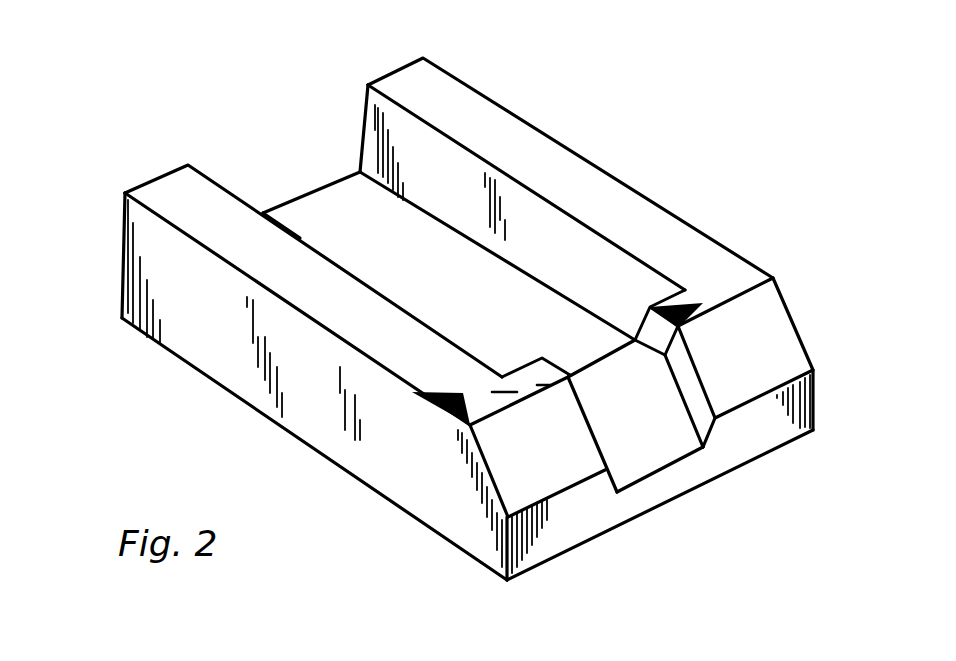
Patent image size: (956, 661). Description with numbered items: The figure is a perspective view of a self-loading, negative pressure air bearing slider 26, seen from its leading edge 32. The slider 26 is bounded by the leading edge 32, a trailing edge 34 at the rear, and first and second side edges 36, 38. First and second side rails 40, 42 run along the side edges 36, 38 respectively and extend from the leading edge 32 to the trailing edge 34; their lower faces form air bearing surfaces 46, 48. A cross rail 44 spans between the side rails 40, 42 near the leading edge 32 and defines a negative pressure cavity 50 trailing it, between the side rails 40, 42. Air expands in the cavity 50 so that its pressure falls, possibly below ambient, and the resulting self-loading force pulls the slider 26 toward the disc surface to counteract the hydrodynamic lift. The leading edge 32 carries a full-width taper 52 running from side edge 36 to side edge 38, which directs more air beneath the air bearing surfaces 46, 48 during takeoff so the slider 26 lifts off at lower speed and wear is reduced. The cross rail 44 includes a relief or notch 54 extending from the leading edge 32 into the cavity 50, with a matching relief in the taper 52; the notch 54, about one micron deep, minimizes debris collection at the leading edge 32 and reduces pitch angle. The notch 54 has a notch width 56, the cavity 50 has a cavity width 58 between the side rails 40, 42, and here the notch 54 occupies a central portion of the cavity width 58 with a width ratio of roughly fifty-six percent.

The slider 26 is at (449, 241).
The leading edge 32 is at (550, 500).
The trailing edge 34 is at (333, 187).
The first side edge 36 is at (343, 343).
The second side edge 38 is at (657, 208).
The first side rail 40 is at (144, 184).
The second side rail 42 is at (407, 62).
The cross rail 44 is at (607, 370).
The air bearing surface 46 is at (237, 236).
The air bearing surface 48 is at (473, 127).
The negative pressure cavity 50 is at (340, 200).
The full-width taper 52 is at (773, 333).
The notch 54 is at (650, 423).
The notch width 56 is at (710, 457).
The cavity width 58 is at (677, 290).